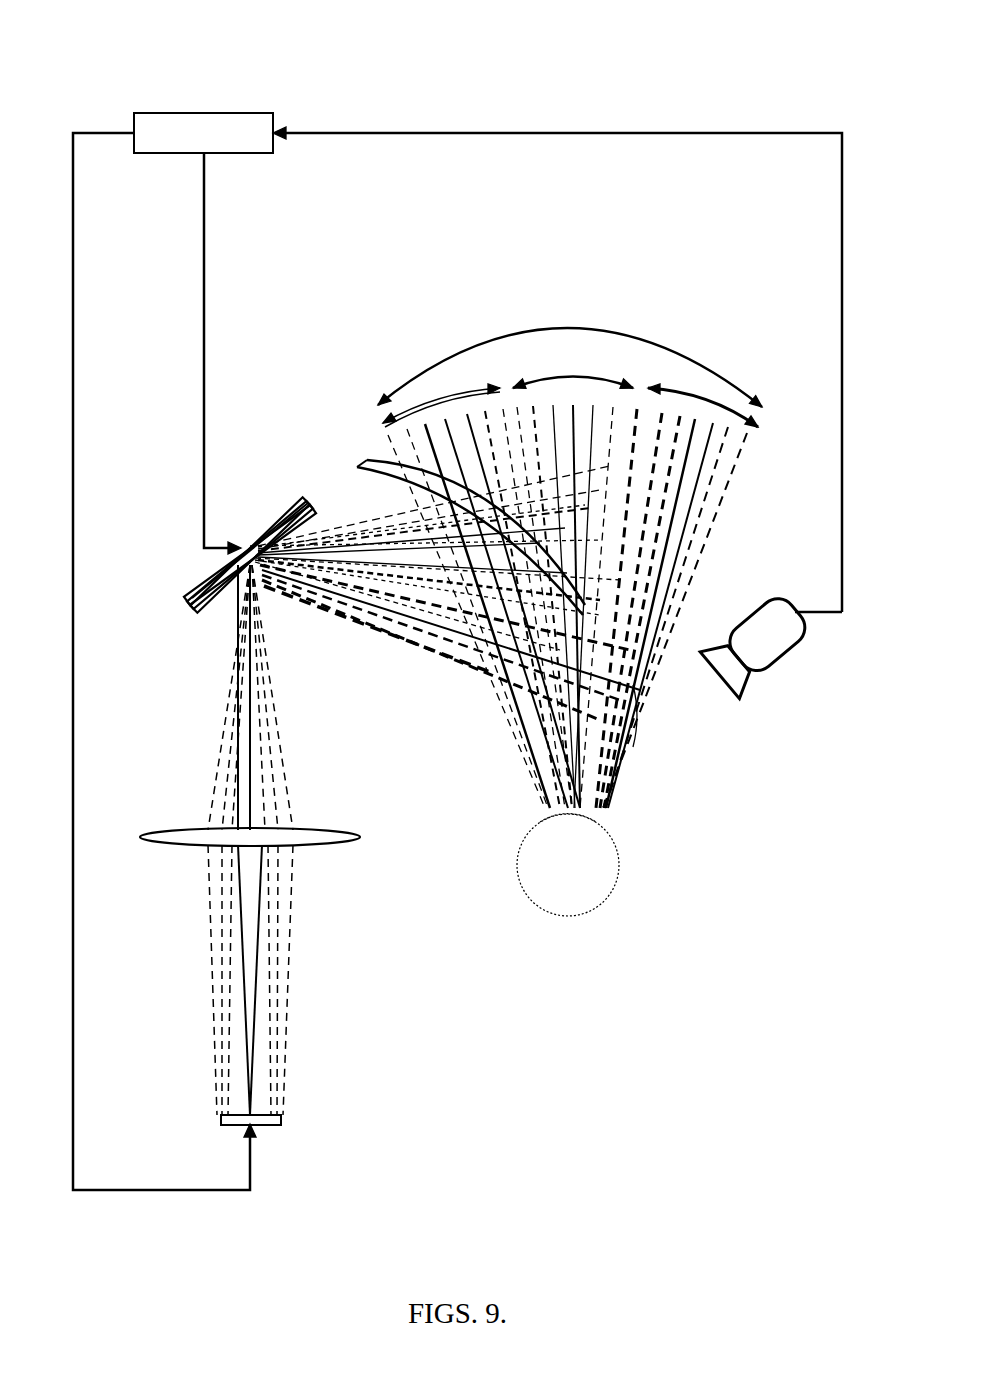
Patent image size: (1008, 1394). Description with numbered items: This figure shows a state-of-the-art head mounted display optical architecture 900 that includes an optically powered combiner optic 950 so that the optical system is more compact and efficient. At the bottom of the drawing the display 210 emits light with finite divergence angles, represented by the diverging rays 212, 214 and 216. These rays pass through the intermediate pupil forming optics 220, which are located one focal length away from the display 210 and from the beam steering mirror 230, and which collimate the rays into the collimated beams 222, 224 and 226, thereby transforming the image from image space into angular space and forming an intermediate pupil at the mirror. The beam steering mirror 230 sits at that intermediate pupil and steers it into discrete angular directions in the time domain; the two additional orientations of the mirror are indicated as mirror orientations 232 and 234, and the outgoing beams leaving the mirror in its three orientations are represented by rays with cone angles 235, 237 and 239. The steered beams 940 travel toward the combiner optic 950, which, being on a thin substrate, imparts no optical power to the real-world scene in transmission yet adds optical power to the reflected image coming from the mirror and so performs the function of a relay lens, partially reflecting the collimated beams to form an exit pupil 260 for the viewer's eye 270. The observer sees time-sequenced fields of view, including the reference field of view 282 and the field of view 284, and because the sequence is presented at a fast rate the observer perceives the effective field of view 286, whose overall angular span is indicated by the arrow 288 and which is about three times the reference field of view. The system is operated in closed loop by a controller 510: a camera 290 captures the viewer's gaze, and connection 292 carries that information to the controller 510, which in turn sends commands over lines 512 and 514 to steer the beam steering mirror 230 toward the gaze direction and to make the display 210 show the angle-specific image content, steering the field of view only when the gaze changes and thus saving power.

The HMD optical architecture 900 is at (183, 48).
The controller 510 is at (200, 112).
The control line to mirror 512 is at (200, 353).
The control line to light source 514 is at (164, 661).
The signal line from camera 292 is at (557, 356).
The total scan range 288 is at (563, 328).
The time-sequenced field of view 284 is at (460, 385).
The reference field of view 282 is at (615, 377).
The effective field of view 286 is at (737, 405).
The beam steering mirror 230 is at (195, 607).
The beam steering mirror orientation 232 is at (185, 590).
The beam steering mirror orientation 234 is at (205, 617).
The outgoing beam cone angle 239 is at (335, 500).
The outgoing beam cone angle 237 is at (452, 536).
The outgoing beam cone angle 235 is at (455, 655).
The scanned beams 940 is at (530, 705).
The optically powered combiner optic 950 is at (633, 747).
The exit pupil 260 is at (590, 814).
The viewer's eye 270 is at (617, 876).
The camera 290 is at (748, 692).
The collimated beam 226 is at (222, 693).
The collimated beam 222 is at (277, 657).
The collimated beam 224 is at (267, 747).
The intermediate pupil forming optics 220 is at (360, 837).
The diverging ray 216 is at (213, 950).
The diverging ray 212 is at (288, 950).
The diverging ray 214 is at (257, 1040).
The display 210 is at (265, 1130).